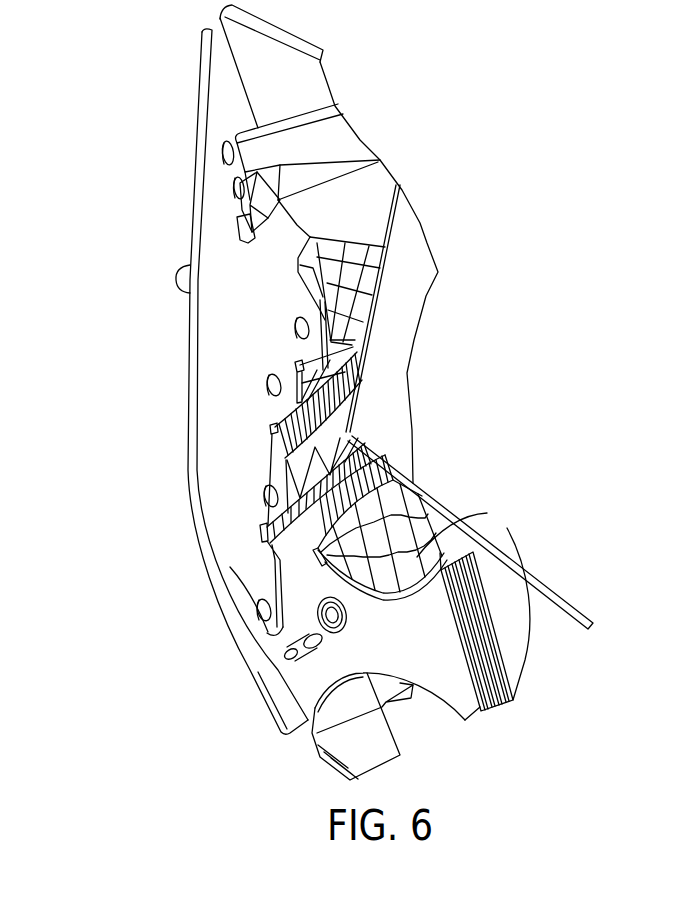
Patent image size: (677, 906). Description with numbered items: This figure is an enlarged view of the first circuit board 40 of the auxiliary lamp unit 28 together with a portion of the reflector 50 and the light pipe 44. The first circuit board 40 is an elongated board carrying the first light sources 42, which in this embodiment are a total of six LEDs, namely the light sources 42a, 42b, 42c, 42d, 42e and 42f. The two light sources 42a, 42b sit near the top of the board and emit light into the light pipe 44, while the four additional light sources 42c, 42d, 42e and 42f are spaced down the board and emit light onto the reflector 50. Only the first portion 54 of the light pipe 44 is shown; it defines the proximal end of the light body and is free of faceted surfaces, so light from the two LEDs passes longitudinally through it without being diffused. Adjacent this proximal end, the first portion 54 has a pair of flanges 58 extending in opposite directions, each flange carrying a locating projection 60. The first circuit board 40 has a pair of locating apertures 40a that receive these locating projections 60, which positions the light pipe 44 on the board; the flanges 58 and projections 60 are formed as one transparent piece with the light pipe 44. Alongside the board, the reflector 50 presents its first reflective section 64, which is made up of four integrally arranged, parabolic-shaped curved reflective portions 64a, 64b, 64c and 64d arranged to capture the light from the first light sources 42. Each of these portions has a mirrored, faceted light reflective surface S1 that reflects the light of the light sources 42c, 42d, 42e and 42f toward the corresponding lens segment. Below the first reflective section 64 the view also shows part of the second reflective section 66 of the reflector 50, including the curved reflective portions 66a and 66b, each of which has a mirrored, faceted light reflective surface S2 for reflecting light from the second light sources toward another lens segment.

The auxiliary lamp unit 28 is at (396, 117).
The first circuit board 40 is at (200, 72).
The locating apertures 40a is at (237, 229).
The first light sources 42 is at (137, 567).
The light source 42a is at (222, 156).
The light source 42b is at (233, 186).
The light source 42c is at (294, 327).
The light source 42d is at (266, 386).
The light source 42e is at (263, 493).
The light source 42f is at (260, 603).
The light pipe 44 is at (343, 178).
The reflector 50 is at (433, 490).
The first portion 54 is at (283, 125).
The flanges 58 is at (263, 205).
The locating projection 60 is at (258, 230).
The first reflective section 64 is at (393, 325).
The curved reflective portion 64a is at (358, 282).
The curved reflective portion 64b is at (333, 365).
The curved reflective portion 64c is at (331, 447).
The curved reflective portion 64d is at (281, 634).
The second reflective section 66 is at (557, 595).
The curved reflective portion 66a is at (387, 597).
The curved reflective portion 66b is at (480, 720).
The light reflective surface S1 is at (352, 260).
The light reflective surface S2 is at (479, 607).